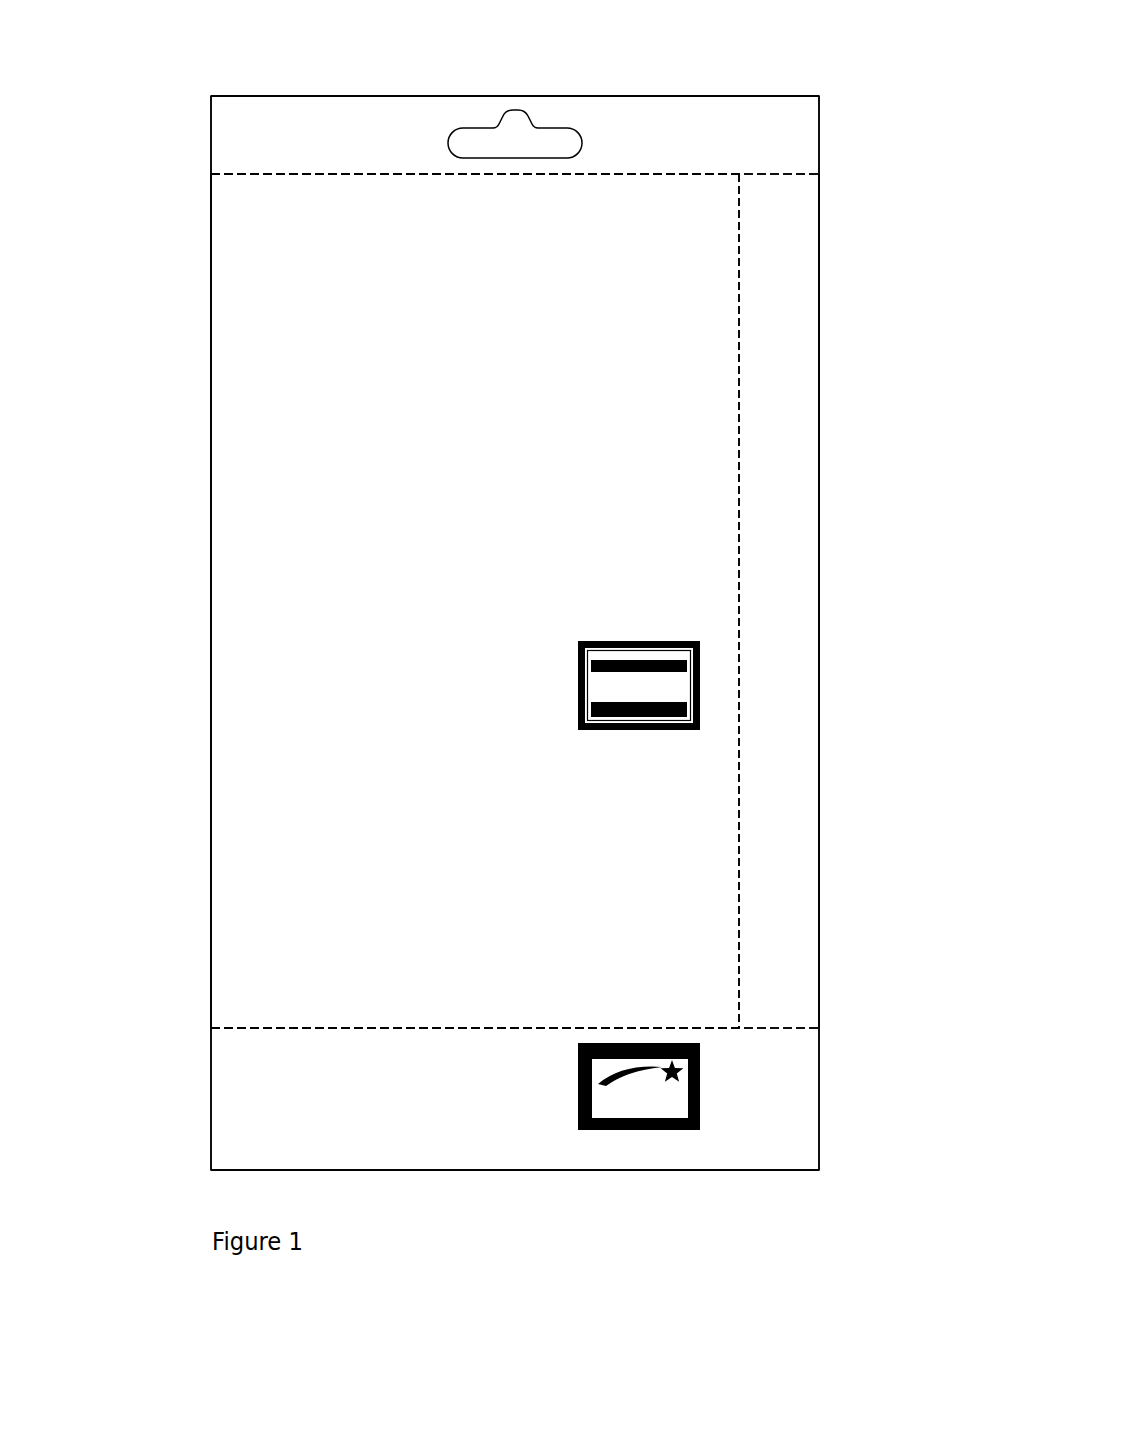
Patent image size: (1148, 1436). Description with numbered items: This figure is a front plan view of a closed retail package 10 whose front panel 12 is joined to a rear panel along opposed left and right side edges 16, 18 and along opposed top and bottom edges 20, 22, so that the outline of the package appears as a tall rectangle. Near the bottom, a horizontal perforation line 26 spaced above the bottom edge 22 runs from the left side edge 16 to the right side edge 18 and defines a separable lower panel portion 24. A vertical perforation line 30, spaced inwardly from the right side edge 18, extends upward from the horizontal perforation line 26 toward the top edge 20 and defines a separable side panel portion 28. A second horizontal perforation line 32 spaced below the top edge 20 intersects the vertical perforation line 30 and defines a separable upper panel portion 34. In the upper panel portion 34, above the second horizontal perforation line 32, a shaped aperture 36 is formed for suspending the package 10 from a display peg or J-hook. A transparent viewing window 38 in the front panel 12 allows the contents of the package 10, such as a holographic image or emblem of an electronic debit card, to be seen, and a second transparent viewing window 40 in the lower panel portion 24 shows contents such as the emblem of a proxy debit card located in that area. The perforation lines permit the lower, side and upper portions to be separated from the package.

The retail package 10 is at (853, 160).
The front panel 12 is at (440, 381).
The left side edge 16 is at (209, 576).
The right side edge 18 is at (822, 392).
The top edge 20 is at (637, 96).
The bottom edge 22 is at (703, 1172).
The separable lower panel portion 24 is at (348, 1107).
The horizontal perforation line 26 is at (235, 1029).
The separable side panel portion 28 is at (757, 833).
The vertical perforation line 30 is at (742, 502).
The second horizontal perforation line 32 is at (278, 174).
The separable upper panel portion 34 is at (685, 150).
The shaped aperture 36 is at (475, 127).
The transparent viewing window 38 is at (702, 660).
The second transparent viewing window 40 is at (702, 1082).